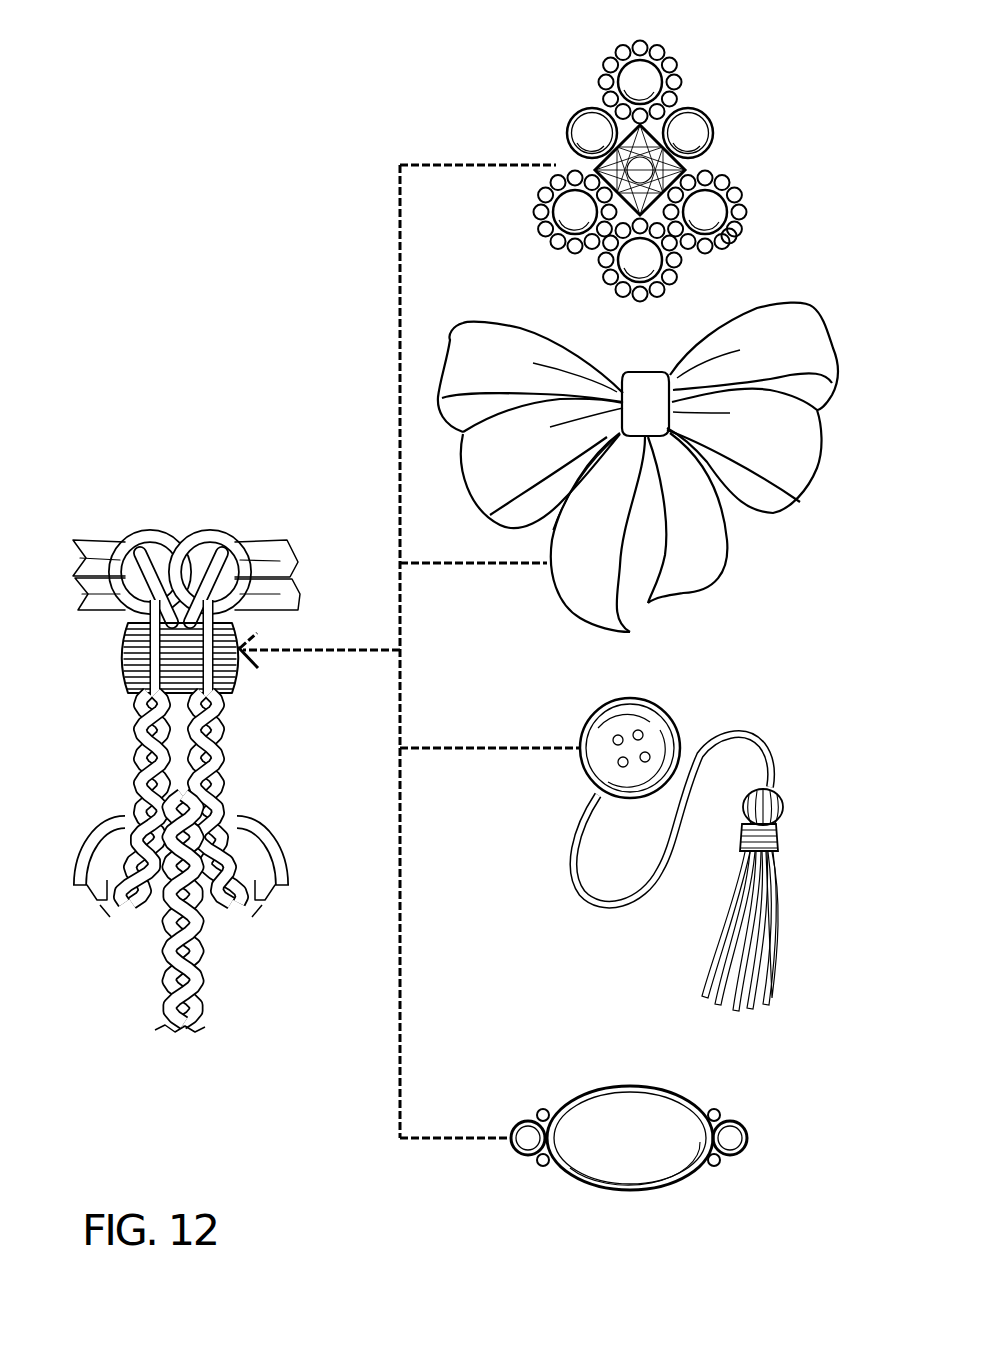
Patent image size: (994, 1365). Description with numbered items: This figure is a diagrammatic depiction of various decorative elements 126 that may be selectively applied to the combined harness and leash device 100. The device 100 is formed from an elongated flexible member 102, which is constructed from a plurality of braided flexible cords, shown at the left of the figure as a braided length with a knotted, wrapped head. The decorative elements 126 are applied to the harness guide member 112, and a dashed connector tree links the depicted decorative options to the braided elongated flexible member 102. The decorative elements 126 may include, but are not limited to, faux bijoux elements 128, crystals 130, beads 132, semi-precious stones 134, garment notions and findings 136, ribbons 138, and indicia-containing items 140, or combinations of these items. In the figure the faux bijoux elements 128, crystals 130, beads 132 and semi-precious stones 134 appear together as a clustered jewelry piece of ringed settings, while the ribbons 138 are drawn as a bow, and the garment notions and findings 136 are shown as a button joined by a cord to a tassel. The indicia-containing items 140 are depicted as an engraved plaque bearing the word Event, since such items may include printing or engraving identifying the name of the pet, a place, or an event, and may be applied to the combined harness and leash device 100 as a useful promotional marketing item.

The combined harness and leash device 100 is at (170, 68).
The harness guide member 112 is at (143, 508).
The elongated flexible member 102 is at (250, 790).
The decorative elements 126 is at (628, 637).
The crystals 130 is at (677, 149).
The faux bijoux elements 128 is at (745, 213).
The beads 132 is at (708, 217).
The semi-precious stones 134 is at (729, 238).
The ribbons 138 is at (498, 326).
The garment notions and findings 136 is at (597, 714).
The indicia-containing items 140 is at (695, 1104).